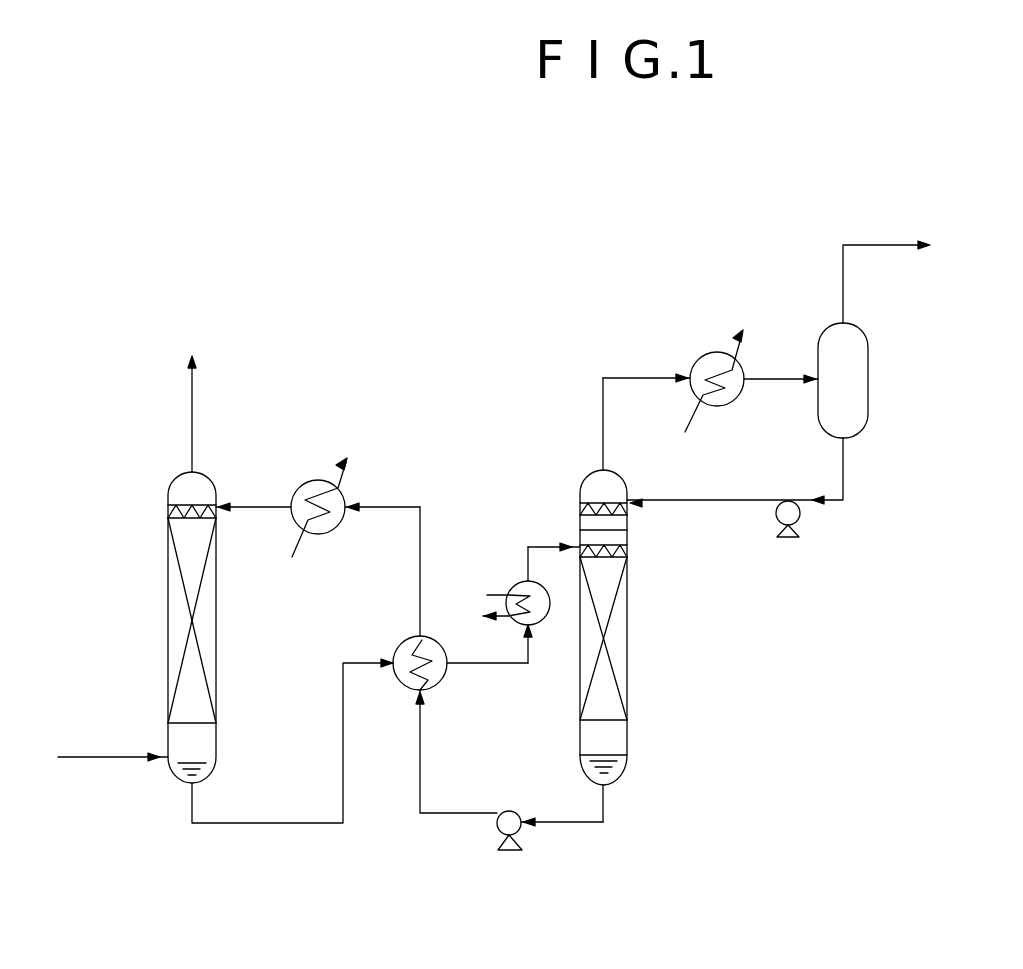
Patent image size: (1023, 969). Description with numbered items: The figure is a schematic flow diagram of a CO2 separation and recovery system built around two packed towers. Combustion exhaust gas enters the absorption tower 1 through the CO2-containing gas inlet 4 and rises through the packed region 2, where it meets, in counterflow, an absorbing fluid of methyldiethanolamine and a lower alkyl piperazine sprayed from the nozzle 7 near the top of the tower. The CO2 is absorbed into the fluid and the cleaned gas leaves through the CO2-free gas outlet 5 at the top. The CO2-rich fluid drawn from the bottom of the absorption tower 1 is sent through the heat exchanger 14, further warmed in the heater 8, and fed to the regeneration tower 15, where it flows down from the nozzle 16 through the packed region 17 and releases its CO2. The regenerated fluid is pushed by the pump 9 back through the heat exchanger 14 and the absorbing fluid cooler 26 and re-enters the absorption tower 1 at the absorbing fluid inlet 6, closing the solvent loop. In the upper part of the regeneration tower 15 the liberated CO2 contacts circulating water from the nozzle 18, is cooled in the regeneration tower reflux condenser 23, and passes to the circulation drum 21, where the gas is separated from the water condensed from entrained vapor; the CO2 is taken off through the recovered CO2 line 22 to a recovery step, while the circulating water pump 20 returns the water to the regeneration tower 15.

The absorption tower 1 is at (168, 672).
The packed region 2 is at (212, 657).
The CO2-containing gas inlet 4 is at (100, 757).
The CO2-free gas outlet 5 is at (192, 400).
The absorbing fluid inlet 6 is at (253, 507).
The nozzle 7 is at (168, 512).
The heater 8 is at (522, 627).
The pump 9 is at (500, 830).
The heat exchanger 14 is at (395, 657).
The regeneration tower 15 is at (620, 735).
The nozzle 16 is at (606, 548).
The packed region 17 is at (620, 670).
The nozzle 18 is at (580, 507).
The circulating water pump 20 is at (795, 516).
The circulation drum 21 is at (855, 398).
The recovered CO2 line 22 is at (900, 248).
The regeneration tower reflux condenser 23 is at (690, 368).
The absorbing fluid cooler 26 is at (385, 460).